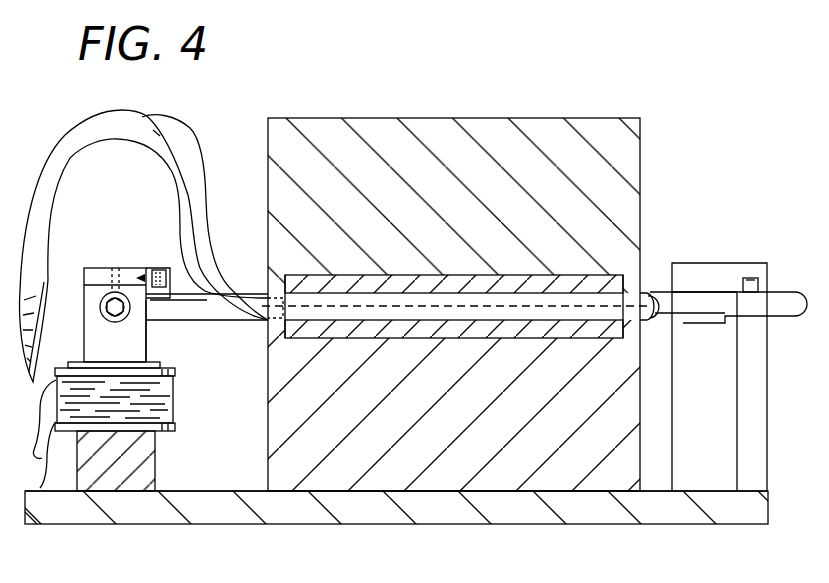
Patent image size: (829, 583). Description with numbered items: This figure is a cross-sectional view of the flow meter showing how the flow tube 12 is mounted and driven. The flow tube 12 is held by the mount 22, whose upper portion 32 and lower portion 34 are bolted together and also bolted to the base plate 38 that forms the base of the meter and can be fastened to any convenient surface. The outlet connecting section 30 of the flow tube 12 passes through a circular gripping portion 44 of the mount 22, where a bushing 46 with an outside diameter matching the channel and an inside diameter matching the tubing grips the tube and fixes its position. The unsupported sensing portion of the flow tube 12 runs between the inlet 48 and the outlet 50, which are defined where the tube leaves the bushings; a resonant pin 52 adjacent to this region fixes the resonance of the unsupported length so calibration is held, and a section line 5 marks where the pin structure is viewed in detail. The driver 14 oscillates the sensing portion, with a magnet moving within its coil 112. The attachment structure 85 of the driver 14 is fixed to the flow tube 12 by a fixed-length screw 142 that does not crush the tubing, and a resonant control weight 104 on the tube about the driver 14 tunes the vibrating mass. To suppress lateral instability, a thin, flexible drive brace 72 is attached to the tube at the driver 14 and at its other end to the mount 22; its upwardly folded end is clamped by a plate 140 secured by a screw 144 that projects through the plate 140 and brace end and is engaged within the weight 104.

The mount 22 is at (493, 107).
The outlet connecting section 30 is at (201, 138).
The upper portion 32 is at (628, 153).
The gripping portion 44 is at (393, 275).
The bushing 46 is at (498, 278).
The flow tube 12 is at (160, 268).
The resonant control weight 104 is at (90, 268).
The screw 142 is at (112, 267).
The attachment structure 85 is at (140, 345).
The plate 140 is at (163, 292).
The screw 144 is at (163, 292).
The drive brace 72 is at (195, 302).
The coil 112 is at (160, 403).
The driver 14 is at (189, 433).
The lower portion 34 is at (440, 500).
The base plate 38 is at (150, 512).
The inlet 48 is at (665, 300).
The outlet 50 is at (655, 318).
The resonant pin 52 is at (757, 353).
The section line 5- 5 is at (730, 273).